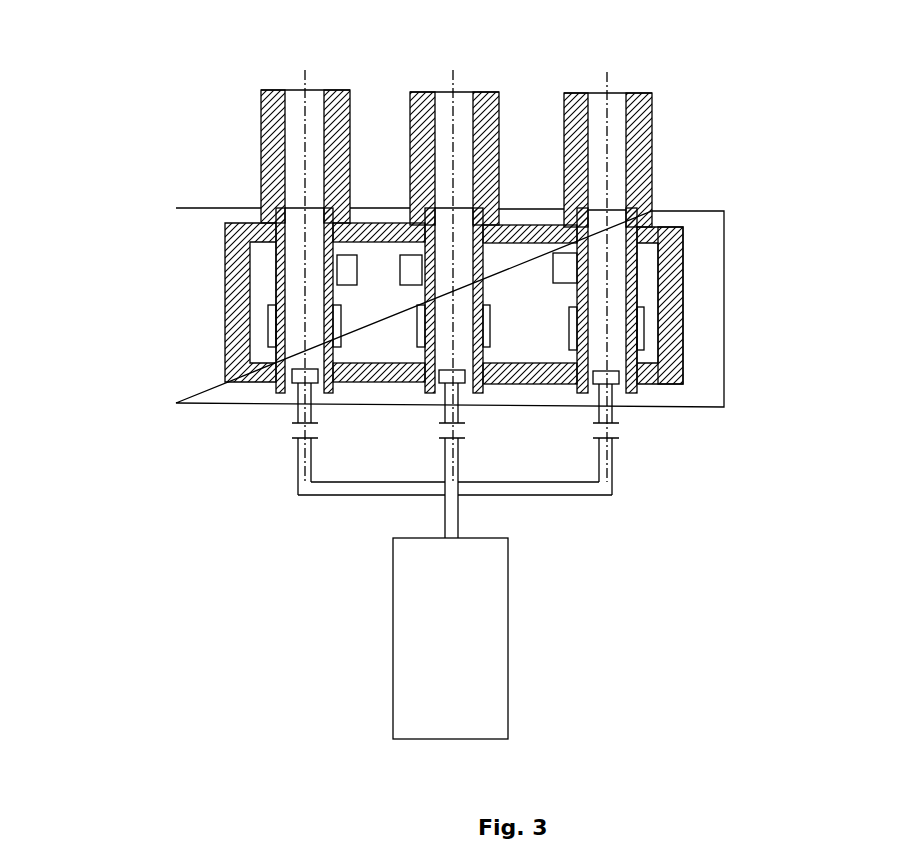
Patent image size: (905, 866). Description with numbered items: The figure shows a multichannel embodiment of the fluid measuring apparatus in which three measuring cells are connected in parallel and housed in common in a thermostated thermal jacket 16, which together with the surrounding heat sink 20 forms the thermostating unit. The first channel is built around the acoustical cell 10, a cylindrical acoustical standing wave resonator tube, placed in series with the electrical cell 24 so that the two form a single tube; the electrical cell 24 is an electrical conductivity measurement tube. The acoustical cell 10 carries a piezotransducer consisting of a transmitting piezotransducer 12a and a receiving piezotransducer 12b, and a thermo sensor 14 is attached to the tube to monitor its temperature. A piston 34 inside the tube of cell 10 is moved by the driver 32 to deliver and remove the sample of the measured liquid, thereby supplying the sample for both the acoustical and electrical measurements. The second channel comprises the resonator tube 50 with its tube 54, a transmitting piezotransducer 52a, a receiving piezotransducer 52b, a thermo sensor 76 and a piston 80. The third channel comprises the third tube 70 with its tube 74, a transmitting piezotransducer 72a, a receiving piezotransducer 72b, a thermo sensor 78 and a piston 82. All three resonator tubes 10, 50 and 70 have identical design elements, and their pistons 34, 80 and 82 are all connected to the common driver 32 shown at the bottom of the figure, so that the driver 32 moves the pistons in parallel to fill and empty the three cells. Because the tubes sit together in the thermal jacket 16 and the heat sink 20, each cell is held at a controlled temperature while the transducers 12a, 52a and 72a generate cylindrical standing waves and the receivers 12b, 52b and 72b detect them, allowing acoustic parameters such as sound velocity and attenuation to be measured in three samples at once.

The acoustical cell 10 is at (270, 345).
The transmitting piezotransducer 12a is at (268, 322).
The receiving piezotransducer 12b is at (333, 320).
The thermo sensor 14 is at (351, 264).
The thermal jacket 16 is at (668, 265).
The heat sink 20 is at (705, 235).
The electrical cell 24 is at (263, 190).
The driver 32 is at (487, 695).
The piston 34 is at (273, 385).
The resonator tube 50 is at (438, 383).
The transmitting piezotransducer 52a is at (417, 347).
The receiving piezotransducer 52b is at (490, 348).
The tube 54 is at (410, 92).
The third tube 70 is at (683, 387).
The transmitting piezotransducer 72a is at (585, 325).
The receiving piezotransducer 72b is at (643, 337).
The tube 74 is at (565, 93).
The thermo sensor 76 is at (412, 266).
The thermo sensor 78 is at (560, 262).
The piston 80 is at (477, 390).
The piston 82 is at (628, 394).